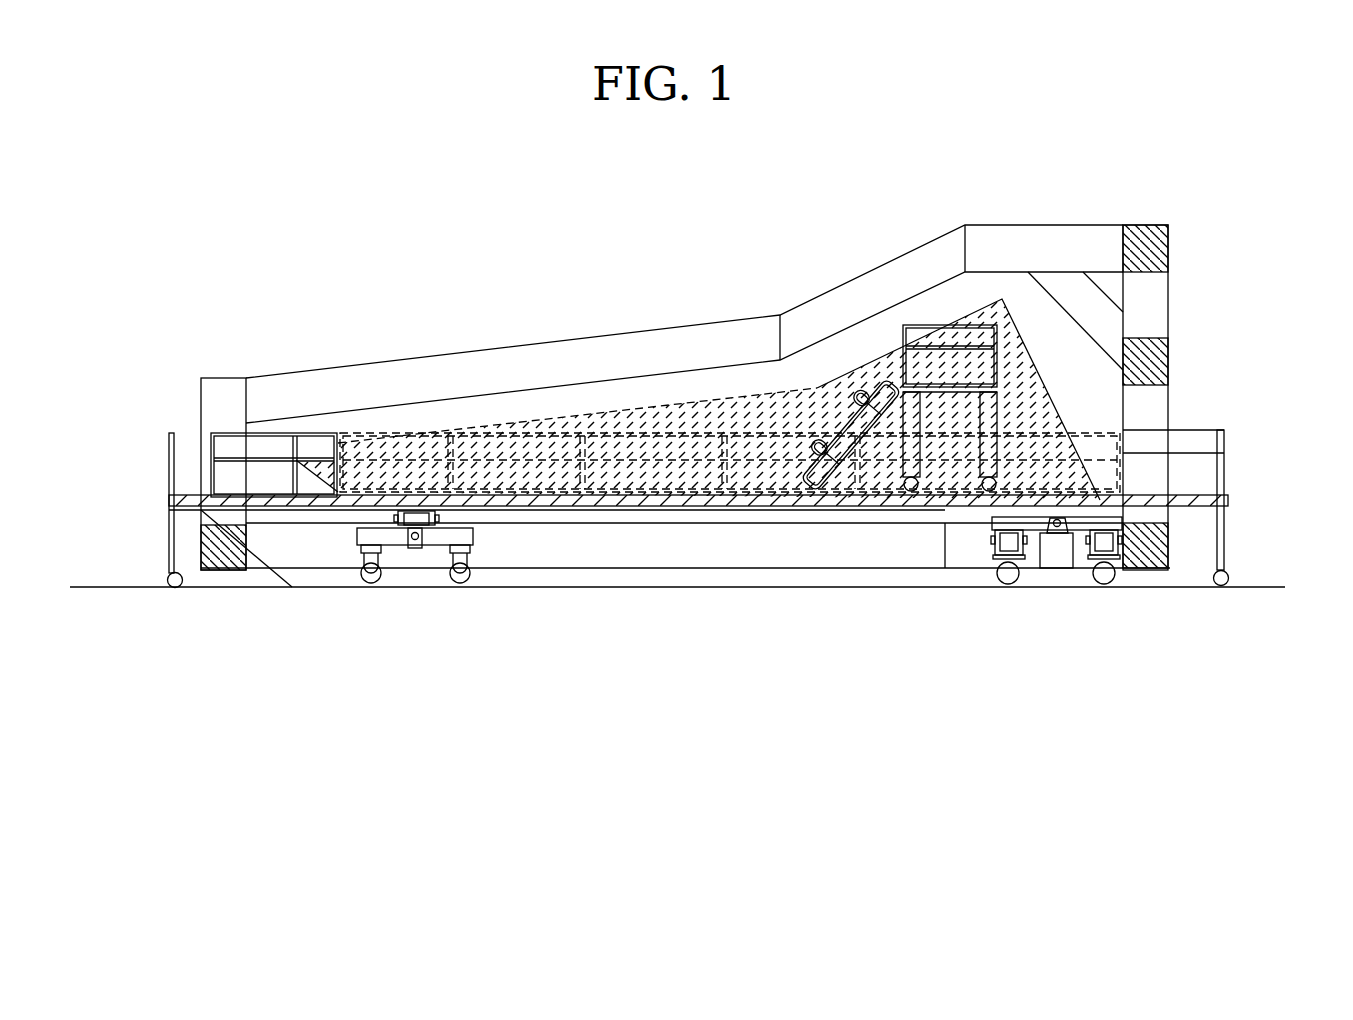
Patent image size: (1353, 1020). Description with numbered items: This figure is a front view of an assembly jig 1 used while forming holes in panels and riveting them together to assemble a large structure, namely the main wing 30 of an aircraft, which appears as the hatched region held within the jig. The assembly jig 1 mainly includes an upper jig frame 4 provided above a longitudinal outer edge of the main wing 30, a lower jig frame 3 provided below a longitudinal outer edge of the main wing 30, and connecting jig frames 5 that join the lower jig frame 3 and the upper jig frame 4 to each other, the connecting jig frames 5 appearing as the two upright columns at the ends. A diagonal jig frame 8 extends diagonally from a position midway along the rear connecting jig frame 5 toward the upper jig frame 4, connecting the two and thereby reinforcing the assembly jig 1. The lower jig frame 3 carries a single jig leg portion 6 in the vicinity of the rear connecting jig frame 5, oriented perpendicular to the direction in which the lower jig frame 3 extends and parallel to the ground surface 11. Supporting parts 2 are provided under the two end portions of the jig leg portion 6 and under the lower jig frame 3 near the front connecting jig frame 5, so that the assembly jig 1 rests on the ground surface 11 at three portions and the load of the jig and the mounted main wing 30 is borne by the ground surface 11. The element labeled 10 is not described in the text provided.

The assembly jig 1 is at (1115, 152).
The supporting parts 2 is at (488, 581).
The lower jig frame 3 is at (623, 546).
The upper jig frame 4 is at (893, 261).
The connecting jig frames 5 is at (201, 396).
The jig leg portion 6 is at (1054, 560).
The diagonal jig frame 8 is at (1108, 362).
The lifting device 10 is at (938, 325).
The ground surface 11 is at (1265, 585).
The main wing 30 is at (1036, 347).